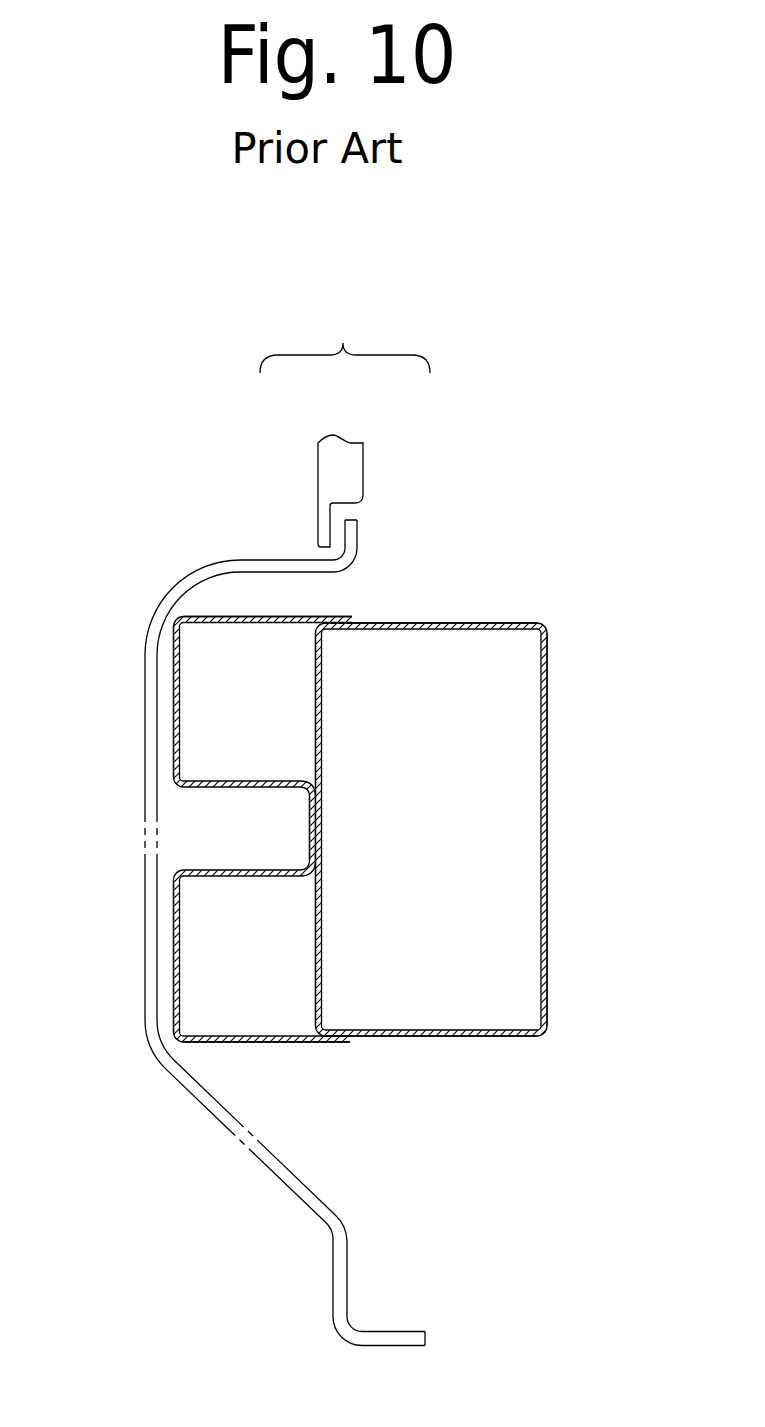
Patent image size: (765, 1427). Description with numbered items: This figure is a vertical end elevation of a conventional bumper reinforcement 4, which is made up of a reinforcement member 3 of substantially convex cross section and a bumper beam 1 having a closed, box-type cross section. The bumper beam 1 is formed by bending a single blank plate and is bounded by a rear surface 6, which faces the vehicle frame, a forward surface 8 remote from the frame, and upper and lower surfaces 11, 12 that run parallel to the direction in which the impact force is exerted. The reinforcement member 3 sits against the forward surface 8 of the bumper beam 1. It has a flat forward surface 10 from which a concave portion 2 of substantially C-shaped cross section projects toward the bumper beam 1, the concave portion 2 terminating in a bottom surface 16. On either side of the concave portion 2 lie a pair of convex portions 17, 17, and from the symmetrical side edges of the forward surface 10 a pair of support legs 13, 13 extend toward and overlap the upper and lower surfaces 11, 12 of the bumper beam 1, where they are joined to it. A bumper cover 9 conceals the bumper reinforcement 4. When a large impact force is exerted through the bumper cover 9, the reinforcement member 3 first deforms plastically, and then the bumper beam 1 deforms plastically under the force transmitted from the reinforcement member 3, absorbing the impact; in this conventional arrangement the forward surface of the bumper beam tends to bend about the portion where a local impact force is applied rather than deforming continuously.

The bumper beam 1 is at (400, 606).
The concave portion 2 is at (297, 842).
The reinforcement member 3 is at (288, 606).
The bumper reinforcement 4 is at (345, 342).
The rear surface of bumper beam 6 is at (547, 723).
The forward surface of bumper beam 8 is at (313, 680).
The bumper cover 9 is at (327, 1238).
The forward surface of reinforcement member 10 is at (175, 713).
The upper surface of bumper beam 11 is at (492, 622).
The lower surface of bumper beam 12 is at (458, 1038).
The support leg 13 is at (240, 617).
The bottom surface of concave portion 16 is at (312, 807).
The convex portion 17 is at (287, 720).